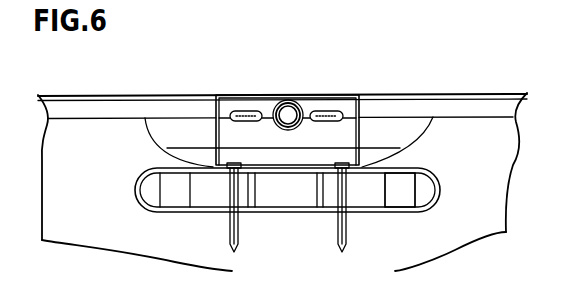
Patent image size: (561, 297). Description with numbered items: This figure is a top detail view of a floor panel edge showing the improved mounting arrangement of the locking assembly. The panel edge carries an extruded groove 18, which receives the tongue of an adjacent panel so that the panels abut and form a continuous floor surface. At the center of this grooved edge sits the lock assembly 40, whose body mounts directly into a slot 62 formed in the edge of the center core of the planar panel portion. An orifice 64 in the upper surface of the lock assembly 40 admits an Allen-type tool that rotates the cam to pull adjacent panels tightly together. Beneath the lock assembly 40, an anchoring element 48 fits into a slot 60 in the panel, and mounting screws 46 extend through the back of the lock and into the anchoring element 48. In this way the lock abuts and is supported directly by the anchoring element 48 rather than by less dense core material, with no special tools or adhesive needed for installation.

The groove 18 is at (108, 105).
The lock assembly 40 is at (340, 103).
The mounting screw 46 is at (338, 238).
The anchoring element 48 is at (400, 183).
The slot 60 is at (178, 210).
The slot 62 is at (417, 138).
The orifice 64 is at (289, 107).